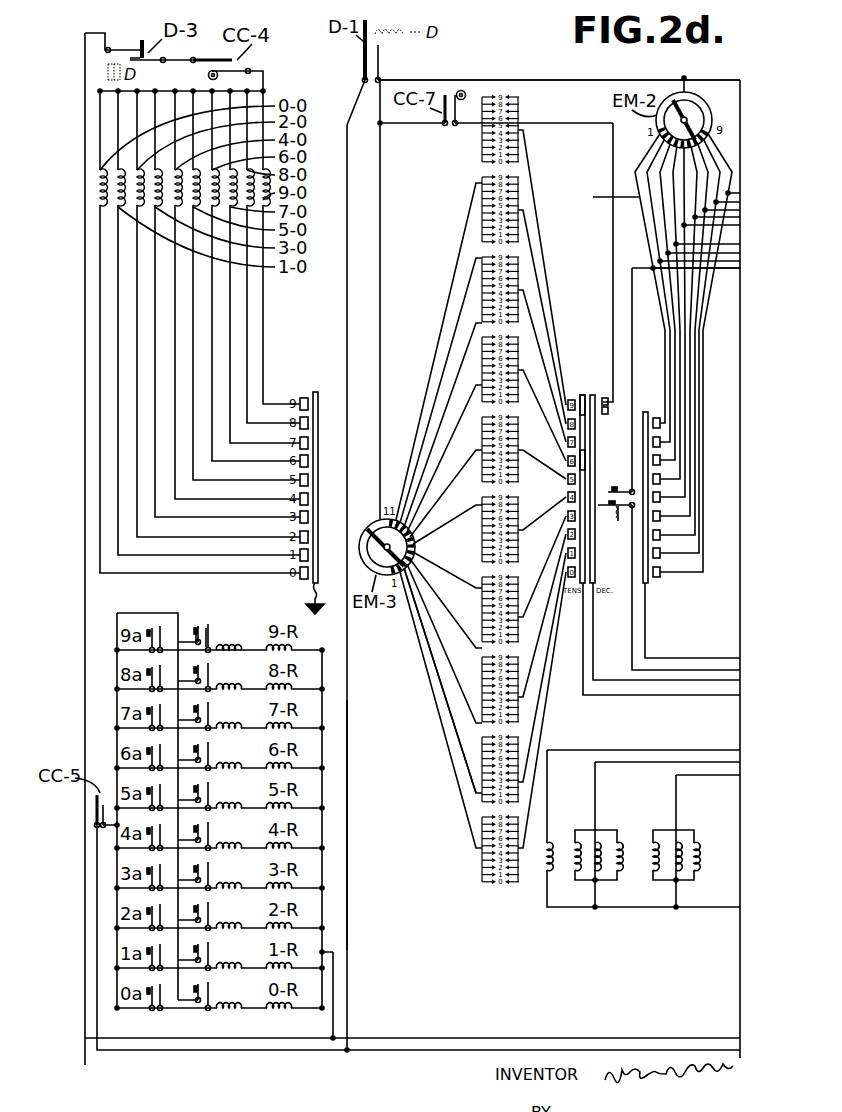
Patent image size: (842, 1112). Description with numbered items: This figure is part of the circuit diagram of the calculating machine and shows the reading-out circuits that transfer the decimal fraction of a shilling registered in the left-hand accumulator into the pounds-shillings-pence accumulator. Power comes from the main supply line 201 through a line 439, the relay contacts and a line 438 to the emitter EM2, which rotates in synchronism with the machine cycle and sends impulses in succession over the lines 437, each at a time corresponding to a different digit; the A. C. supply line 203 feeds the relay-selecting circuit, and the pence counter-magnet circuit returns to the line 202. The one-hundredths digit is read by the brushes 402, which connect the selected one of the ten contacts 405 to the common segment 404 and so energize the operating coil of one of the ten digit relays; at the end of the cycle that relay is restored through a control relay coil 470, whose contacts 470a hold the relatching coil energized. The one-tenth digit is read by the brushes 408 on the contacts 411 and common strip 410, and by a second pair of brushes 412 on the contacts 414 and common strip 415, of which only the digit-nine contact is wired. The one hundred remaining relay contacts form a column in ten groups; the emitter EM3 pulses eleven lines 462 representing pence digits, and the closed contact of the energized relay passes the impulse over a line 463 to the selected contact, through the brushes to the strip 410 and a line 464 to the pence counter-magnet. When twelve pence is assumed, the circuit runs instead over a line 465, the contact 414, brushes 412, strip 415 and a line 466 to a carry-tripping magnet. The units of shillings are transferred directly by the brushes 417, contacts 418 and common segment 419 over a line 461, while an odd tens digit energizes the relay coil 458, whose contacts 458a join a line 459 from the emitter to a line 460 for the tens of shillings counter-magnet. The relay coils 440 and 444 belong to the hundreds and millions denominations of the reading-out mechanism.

The A. C. supply line 203 is at (94, 33).
The contacts 405 is at (303, 392).
The semi-circular conducting segment 404 is at (328, 386).
The brushes 402 is at (309, 557).
The contacts 470a is at (202, 626).
The control relay coil 470 is at (233, 687).
The line 438 is at (561, 79).
The line 465 is at (613, 160).
The lines 437 is at (601, 196).
The line 463 is at (541, 283).
The contacts 411 is at (571, 396).
The common strip 415 is at (593, 395).
The contacts 414 is at (605, 411).
The brushes 412 is at (597, 413).
The brushes 408 is at (586, 408).
The common strip 410 is at (588, 460).
The relay coil 458 is at (598, 490).
The contacts 458a is at (616, 511).
The brushes 417 is at (652, 518).
The line 459 is at (632, 333).
The common segment 419 is at (645, 412).
The contacts 418 is at (662, 576).
The line 461 is at (648, 616).
The line 460 is at (636, 653).
The line 466 is at (628, 681).
The line 464 is at (683, 694).
The lines 462 is at (434, 698).
The line 439 is at (347, 818).
The relay coil 440 is at (597, 842).
The relay coils 444 is at (683, 842).
The line 202 is at (424, 1038).
The main supply line 201 is at (516, 1050).